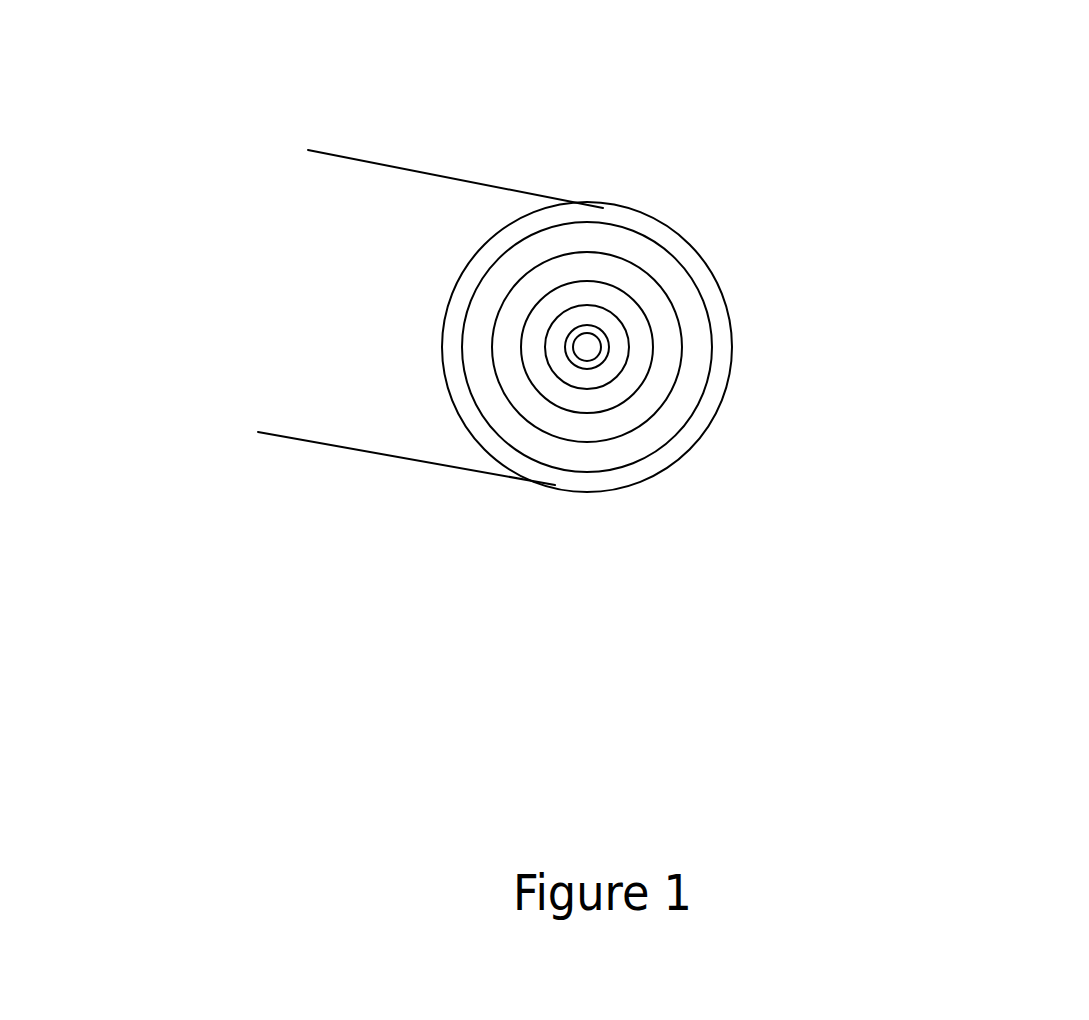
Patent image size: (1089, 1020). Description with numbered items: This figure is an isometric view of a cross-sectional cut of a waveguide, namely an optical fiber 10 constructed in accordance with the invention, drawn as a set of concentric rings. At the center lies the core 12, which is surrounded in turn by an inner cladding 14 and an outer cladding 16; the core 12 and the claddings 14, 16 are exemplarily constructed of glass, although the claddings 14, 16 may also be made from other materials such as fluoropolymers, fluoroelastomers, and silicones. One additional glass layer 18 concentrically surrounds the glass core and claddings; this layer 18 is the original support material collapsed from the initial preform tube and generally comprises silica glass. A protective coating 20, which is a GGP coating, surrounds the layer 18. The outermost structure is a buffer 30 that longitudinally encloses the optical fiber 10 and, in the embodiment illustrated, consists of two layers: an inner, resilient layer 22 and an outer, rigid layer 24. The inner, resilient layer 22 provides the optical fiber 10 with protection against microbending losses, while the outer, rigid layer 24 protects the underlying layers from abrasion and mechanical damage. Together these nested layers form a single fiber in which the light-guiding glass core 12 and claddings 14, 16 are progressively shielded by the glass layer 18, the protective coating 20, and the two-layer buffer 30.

The optical fiber 10 is at (382, 136).
The core 12 is at (587, 347).
The inner cladding 14 is at (601, 338).
The outer cladding 16 is at (620, 352).
The glass layer 18 is at (634, 388).
The protective coating 20 is at (638, 417).
The inner resilient layer 22 is at (612, 462).
The outer rigid layer 24 is at (535, 470).
The buffer 30 is at (452, 355).